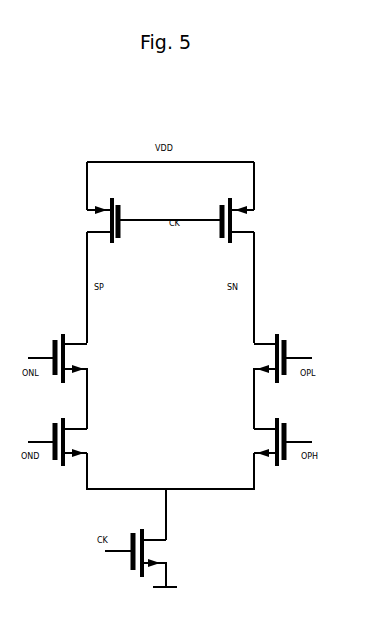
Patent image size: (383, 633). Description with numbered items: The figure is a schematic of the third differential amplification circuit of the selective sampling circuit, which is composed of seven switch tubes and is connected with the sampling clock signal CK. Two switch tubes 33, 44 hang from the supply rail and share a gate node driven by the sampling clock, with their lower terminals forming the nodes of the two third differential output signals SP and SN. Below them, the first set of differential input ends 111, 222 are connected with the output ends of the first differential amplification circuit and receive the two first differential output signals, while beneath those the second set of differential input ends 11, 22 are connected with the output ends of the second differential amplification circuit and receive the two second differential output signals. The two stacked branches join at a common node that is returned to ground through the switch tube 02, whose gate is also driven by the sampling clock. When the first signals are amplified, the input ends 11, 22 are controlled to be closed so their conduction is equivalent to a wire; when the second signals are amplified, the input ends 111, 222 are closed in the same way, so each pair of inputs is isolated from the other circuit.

The switch tube 33 is at (85, 220).
The switch tube 44 is at (255, 220).
The first set differential input end 111 is at (76, 358).
The first set differential input end 222 is at (262, 358).
The second set differential input end 11 is at (74, 442).
The second set differential input end 22 is at (268, 442).
The switch tube 02 is at (161, 558).